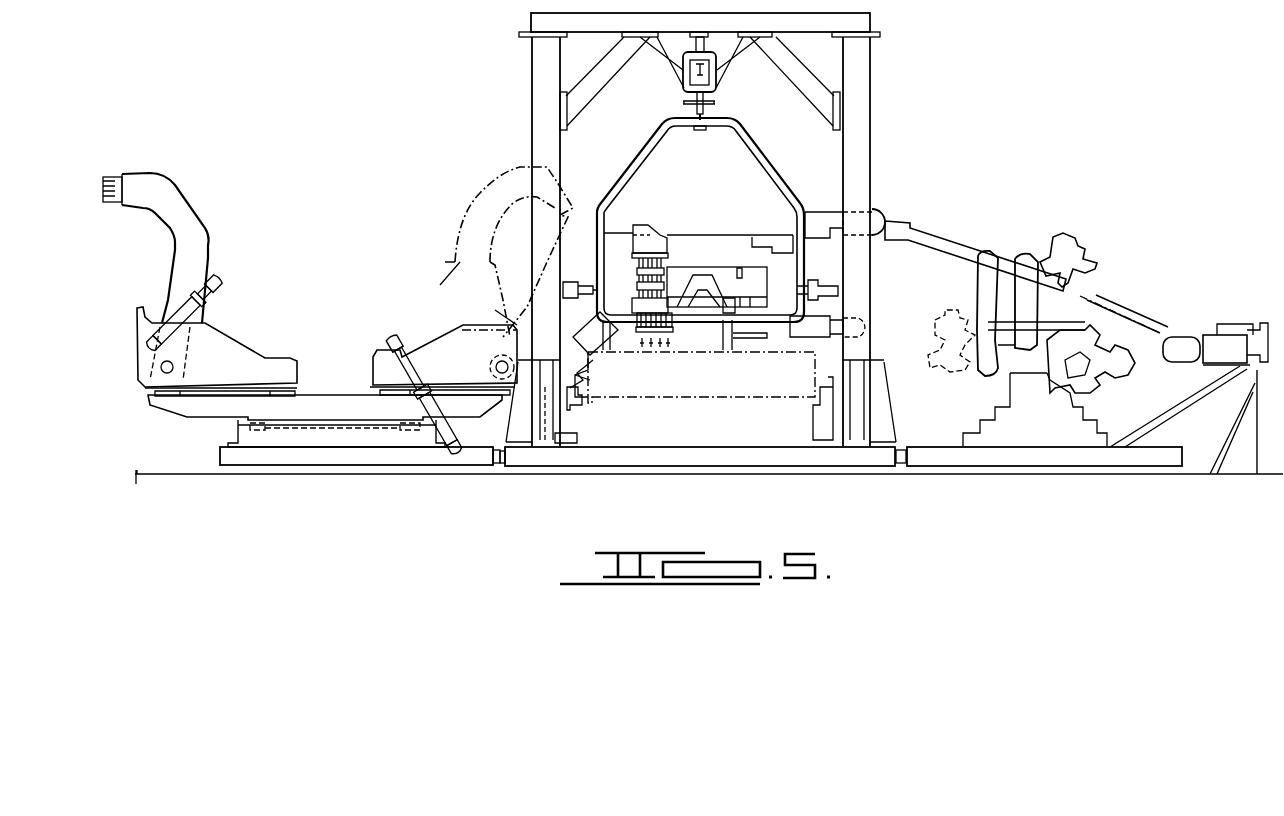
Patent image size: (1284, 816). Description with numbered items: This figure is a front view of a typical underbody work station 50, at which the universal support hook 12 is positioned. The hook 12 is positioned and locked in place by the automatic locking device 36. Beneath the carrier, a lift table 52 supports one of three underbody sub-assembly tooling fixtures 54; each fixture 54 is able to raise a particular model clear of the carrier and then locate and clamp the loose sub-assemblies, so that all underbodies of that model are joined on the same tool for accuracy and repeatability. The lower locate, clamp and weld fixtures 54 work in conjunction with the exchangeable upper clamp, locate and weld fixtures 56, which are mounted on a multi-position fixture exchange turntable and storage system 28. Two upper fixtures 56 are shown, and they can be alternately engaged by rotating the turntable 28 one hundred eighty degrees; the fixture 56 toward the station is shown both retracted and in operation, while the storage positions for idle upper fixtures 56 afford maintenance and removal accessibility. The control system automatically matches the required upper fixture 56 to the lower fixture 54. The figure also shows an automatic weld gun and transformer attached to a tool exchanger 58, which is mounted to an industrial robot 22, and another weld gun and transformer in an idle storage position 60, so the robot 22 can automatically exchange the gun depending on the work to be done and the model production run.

The universal support hook 12 is at (758, 148).
The industrial robot 22 is at (1040, 228).
The multi-position fixture exchange turntable and storage system 28 is at (337, 311).
The automatic locking device 36 is at (807, 275).
The work station 50 is at (905, 69).
The lift table 52 is at (637, 389).
The underbody sub-assembly tooling fixture 54 is at (675, 330).
The upper clamp, locate and weld fixture 56 is at (673, 266).
The tool exchanger 58 is at (884, 203).
The idle storage position 60 is at (1177, 323).